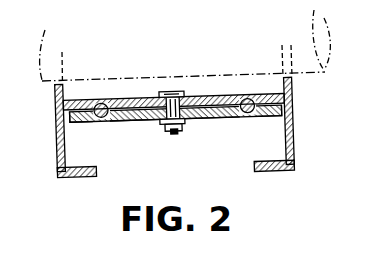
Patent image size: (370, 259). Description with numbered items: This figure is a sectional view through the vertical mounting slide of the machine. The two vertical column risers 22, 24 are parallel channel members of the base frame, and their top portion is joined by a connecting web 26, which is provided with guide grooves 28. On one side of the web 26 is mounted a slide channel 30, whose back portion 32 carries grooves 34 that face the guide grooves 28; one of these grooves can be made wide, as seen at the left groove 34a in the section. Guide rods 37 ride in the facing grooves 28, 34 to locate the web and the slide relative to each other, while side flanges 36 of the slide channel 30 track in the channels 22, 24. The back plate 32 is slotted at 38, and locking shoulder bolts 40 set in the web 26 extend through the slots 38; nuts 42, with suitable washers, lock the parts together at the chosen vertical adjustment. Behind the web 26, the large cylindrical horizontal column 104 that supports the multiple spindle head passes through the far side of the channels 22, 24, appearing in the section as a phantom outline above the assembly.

The vertical column riser 22 is at (57, 142).
The vertical column riser 24 is at (294, 135).
The connecting web 26 is at (118, 97).
The guide grooves 28 is at (99, 103).
The slide channel 30 is at (145, 120).
The back portion 32 is at (201, 119).
The grooves 34 is at (232, 108).
The lower plate left portion 34a is at (96, 118).
The side flanges 36 is at (77, 164).
The guide rods 37 is at (246, 118).
The slots 38 is at (190, 105).
The locking shoulder bolts 40 is at (174, 91).
The nuts 42 is at (169, 135).
The cylindrical horizontal column 104 is at (306, 60).